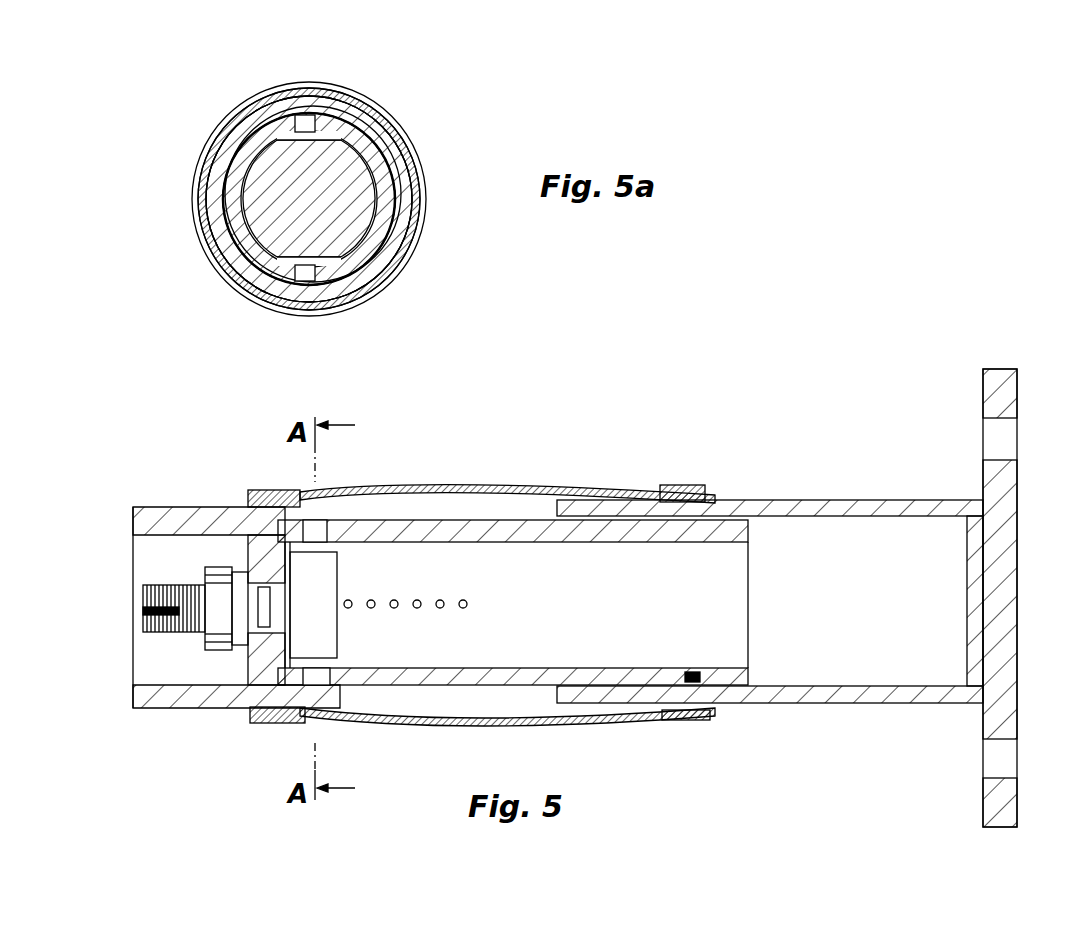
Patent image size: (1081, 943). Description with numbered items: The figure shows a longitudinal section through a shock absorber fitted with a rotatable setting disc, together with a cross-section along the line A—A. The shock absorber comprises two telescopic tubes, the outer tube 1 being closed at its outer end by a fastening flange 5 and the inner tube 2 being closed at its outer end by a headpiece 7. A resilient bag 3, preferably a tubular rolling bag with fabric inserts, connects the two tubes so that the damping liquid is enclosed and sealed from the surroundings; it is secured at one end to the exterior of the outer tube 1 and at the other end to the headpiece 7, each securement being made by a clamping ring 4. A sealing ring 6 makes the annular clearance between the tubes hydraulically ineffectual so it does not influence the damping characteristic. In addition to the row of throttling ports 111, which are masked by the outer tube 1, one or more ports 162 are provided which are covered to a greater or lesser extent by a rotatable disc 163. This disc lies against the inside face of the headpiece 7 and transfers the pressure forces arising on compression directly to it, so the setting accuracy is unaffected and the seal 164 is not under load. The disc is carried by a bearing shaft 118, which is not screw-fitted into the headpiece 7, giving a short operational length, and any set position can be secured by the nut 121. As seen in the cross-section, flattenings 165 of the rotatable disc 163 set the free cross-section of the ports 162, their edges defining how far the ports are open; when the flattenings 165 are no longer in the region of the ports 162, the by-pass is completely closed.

In FIG. 5, the outer tube 1 is at (868, 697).
In FIG. 5A, the inner tube 2 is at (385, 252).
In FIG. 5, the inner tube 2 is at (740, 690).
In FIG. 5A, the resilient bag 3 is at (418, 180).
In FIG. 5, the resilient bag 3 is at (642, 718).
In FIG. 5A, the clamping ring 4 is at (362, 102).
In FIG. 5, the clamping ring 4 is at (292, 722).
In FIG. 5, the fastening flange 5 is at (1012, 806).
In FIG. 5, the sealing ring 6 is at (691, 672).
In FIG. 5, the headpiece 7 is at (258, 682).
In FIG. 5, the throttling ports 111 is at (396, 600).
In FIG. 5, the bearing shaft 118 is at (256, 616).
In FIG. 5, the nut 121 is at (207, 570).
In FIG. 5A, the ports 162 is at (300, 118).
In FIG. 5, the ports 162 is at (318, 530).
In FIG. 5, the rotatable disc 163 is at (325, 585).
In FIG. 5, the seal 164 is at (268, 583).
In FIG. 5A, the flattenings 165 is at (345, 300).